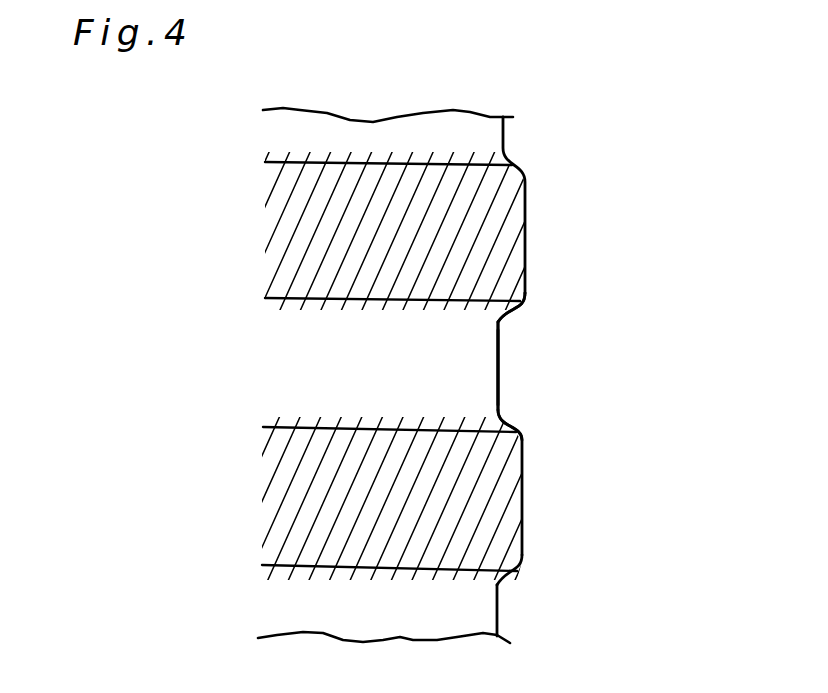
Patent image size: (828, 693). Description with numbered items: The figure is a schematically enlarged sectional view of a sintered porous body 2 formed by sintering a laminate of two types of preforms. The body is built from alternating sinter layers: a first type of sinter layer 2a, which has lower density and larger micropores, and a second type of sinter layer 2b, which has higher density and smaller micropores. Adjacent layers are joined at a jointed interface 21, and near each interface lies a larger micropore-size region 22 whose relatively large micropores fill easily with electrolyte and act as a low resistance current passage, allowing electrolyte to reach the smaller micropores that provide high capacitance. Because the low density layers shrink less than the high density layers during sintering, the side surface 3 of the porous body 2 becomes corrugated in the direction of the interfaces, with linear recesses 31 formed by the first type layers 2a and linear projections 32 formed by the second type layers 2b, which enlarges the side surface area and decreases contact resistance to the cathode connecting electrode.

The sintered porous body 2 is at (664, 118).
The first type of sinter layer 2a is at (521, 233).
The second type of sinter layer 2b is at (458, 370).
The side surface 3 is at (551, 444).
The linear recesses 31 is at (498, 389).
The linear projections 32 is at (524, 273).
The jointed interface 21 is at (363, 298).
The larger micropore-size region 22 is at (342, 242).